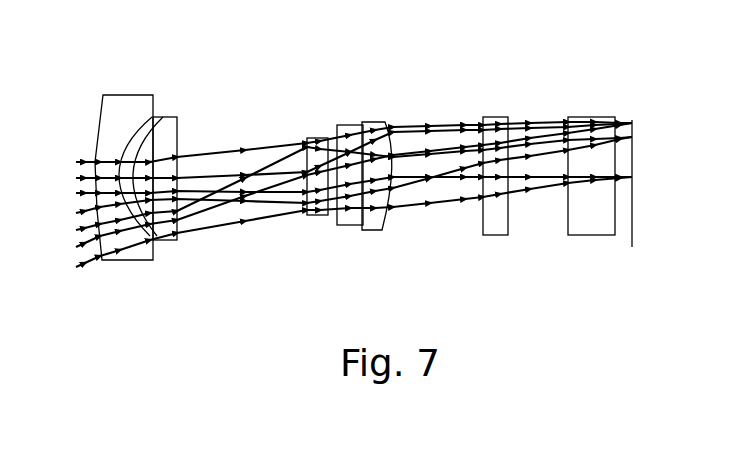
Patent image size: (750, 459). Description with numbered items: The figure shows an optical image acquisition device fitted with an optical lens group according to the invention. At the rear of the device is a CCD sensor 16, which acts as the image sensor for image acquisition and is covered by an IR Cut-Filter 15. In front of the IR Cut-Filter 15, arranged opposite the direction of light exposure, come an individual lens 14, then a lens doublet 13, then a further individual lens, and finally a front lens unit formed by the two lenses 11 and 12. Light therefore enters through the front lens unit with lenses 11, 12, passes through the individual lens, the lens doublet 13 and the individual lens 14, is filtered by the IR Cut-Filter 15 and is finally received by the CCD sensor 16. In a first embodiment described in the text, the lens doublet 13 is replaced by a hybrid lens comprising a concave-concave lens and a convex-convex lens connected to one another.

The lens 11 is at (172, 118).
The lens 12 is at (133, 105).
The lens doublet 13 is at (384, 121).
The individual lens 14 is at (500, 115).
The IR Cut-Filter 15 is at (592, 115).
The CCD sensor 16 is at (633, 217).